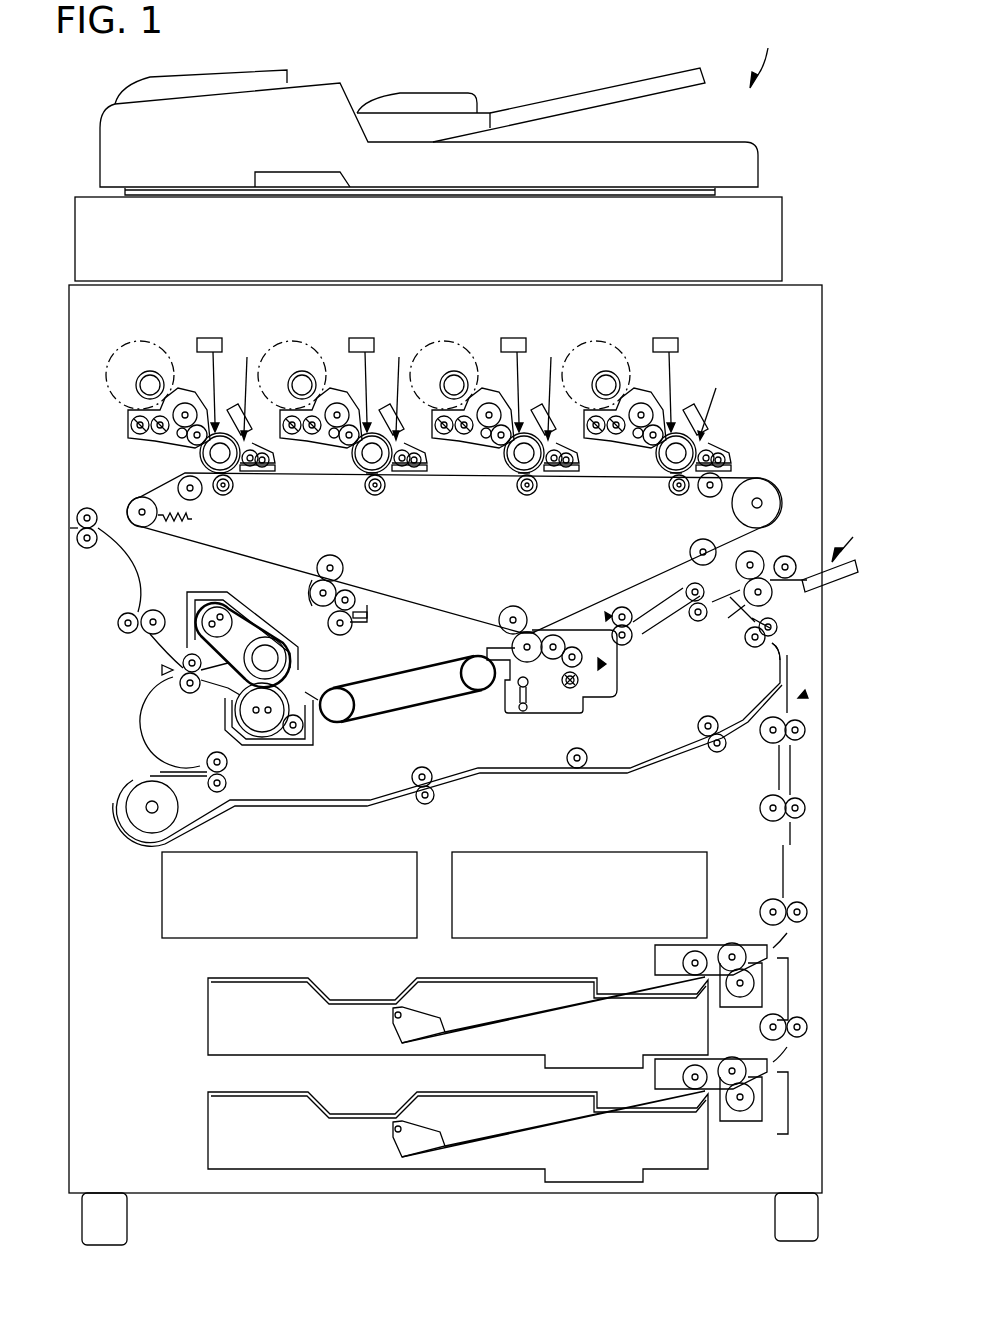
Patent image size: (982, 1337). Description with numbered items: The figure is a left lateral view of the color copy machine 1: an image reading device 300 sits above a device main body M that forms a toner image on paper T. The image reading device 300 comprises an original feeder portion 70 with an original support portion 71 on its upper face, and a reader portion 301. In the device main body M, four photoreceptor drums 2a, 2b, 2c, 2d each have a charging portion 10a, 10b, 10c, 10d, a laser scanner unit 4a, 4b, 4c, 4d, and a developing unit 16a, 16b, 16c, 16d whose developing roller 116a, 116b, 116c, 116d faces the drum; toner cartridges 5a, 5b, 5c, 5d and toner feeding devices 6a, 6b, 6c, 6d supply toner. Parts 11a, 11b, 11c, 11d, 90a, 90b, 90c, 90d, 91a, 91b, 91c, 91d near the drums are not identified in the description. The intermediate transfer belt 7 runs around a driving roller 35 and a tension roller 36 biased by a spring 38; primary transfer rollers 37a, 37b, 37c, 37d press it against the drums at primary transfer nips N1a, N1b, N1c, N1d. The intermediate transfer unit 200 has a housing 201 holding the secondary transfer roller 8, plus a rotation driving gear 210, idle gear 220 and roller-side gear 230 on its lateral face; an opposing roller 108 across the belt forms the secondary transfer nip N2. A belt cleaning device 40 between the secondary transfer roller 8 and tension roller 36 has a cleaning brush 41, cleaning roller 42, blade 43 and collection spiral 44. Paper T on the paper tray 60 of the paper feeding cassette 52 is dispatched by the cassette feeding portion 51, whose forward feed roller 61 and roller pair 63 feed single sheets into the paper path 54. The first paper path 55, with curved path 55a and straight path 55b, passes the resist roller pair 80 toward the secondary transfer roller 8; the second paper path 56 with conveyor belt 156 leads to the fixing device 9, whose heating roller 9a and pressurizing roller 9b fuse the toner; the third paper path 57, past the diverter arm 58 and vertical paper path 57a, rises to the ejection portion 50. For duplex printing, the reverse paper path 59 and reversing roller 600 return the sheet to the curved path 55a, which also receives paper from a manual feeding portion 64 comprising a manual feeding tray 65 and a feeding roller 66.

The color copy machine 1 is at (761, 59).
The image reading device 300 is at (472, 118).
The reader portion 301 is at (765, 200).
The original feeder portion 70 is at (305, 78).
The original support portion 71 is at (495, 95).
The device main body M is at (798, 285).
The photoreceptor drum 2a is at (200, 453).
The photoreceptor drum 2b is at (348, 464).
The photoreceptor drum 2c is at (500, 464).
The photoreceptor drum 2d is at (652, 464).
The laser scanner unit 4a is at (210, 364).
The laser scanner unit 4b is at (362, 364).
The laser scanner unit 4c is at (513, 364).
The laser scanner unit 4d is at (666, 364).
The toner cartridge 5a is at (140, 353).
The toner cartridge 5b is at (292, 352).
The toner cartridge 5c is at (444, 352).
The toner cartridge 5d is at (596, 352).
The toner feeding device 6a is at (158, 358).
The toner feeding device 6b is at (310, 358).
The toner feeding device 6c is at (461, 358).
The toner feeding device 6d is at (614, 358).
The charging portion 10a is at (230, 398).
The charging portion 10b is at (384, 398).
The charging portion 10c is at (538, 399).
The charging portion 10d is at (689, 398).
The charging roller 11a is at (259, 443).
The charging roller 11b is at (411, 443).
The charging roller 11c is at (563, 443).
The charging roller 11d is at (716, 441).
The developing unit 16a is at (190, 393).
The developing unit 16b is at (343, 393).
The developing unit 16c is at (493, 393).
The developing unit 16d is at (646, 393).
The cleaning device 90a is at (247, 388).
The cleaning device 90b is at (400, 388).
The cleaning device 90c is at (552, 388).
The cleaning device 90d is at (719, 406).
The charging unit 91a is at (276, 499).
The charging unit 91b is at (421, 489).
The charging unit 91c is at (574, 487).
The charging unit 91d is at (738, 449).
The developing roller 116a is at (139, 440).
The developing roller 116b is at (307, 442).
The developing roller 116c is at (458, 442).
The developing roller 116d is at (610, 441).
The primary transfer roller 37a is at (242, 500).
The primary transfer roller 37b is at (363, 504).
The primary transfer roller 37c is at (516, 504).
The primary transfer roller 37d is at (668, 504).
The primary transfer nip N1a is at (248, 488).
The primary transfer nip N1b is at (345, 494).
The primary transfer nip N1c is at (496, 495).
The primary transfer nip N1d is at (646, 494).
The intermediate transfer belt 7 is at (393, 477).
The driving roller 35 is at (765, 490).
The tension roller 36 is at (135, 505).
The spring 38 is at (192, 519).
The belt cleaning device 40 is at (368, 616).
The cleaning brush 41 is at (345, 572).
The cleaning roller 42 is at (360, 598).
The blade 43 is at (352, 610).
The collection spiral 44 is at (340, 636).
The ejection portion 50 is at (70, 528).
The third paper path 57 is at (138, 584).
The vertical paper path 57a is at (125, 556).
The diverter arm 58 is at (160, 670).
The fixing device 9 is at (274, 681).
The heating roller 9a is at (262, 632).
The pressurizing roller 9b is at (262, 738).
The reversing roller 600 is at (135, 793).
The reverse paper path 59 is at (312, 808).
The second paper path 56 is at (407, 686).
The conveyor belt 156 is at (400, 712).
The secondary transfer roller 8 is at (510, 640).
The opposing roller 108 is at (515, 606).
The secondary transfer nip N2 is at (530, 630).
The intermediate transfer unit 200 is at (571, 687).
The housing 201 is at (600, 650).
The rotation driving gear 210 is at (590, 680).
The idle gear 220 is at (552, 662).
The roller-side gear 230 is at (520, 690).
The resist roller pair 80 is at (636, 636).
The straight path 55b is at (690, 618).
The feeding roller 66 is at (787, 556).
The manual feeding tray 65 is at (840, 592).
The manual feeding portion 64 is at (846, 538).
The paper path 54 is at (808, 692).
The curved path 55a is at (792, 650).
The first paper path 55 is at (800, 775).
The paper feeding cassette 52 is at (433, 1020).
The paper T is at (220, 1010).
The paper tray 60 is at (560, 1010).
The forward feed roller 61 is at (700, 950).
The roller pair 63 is at (735, 943).
The cassette feeding portion 51 is at (790, 992).